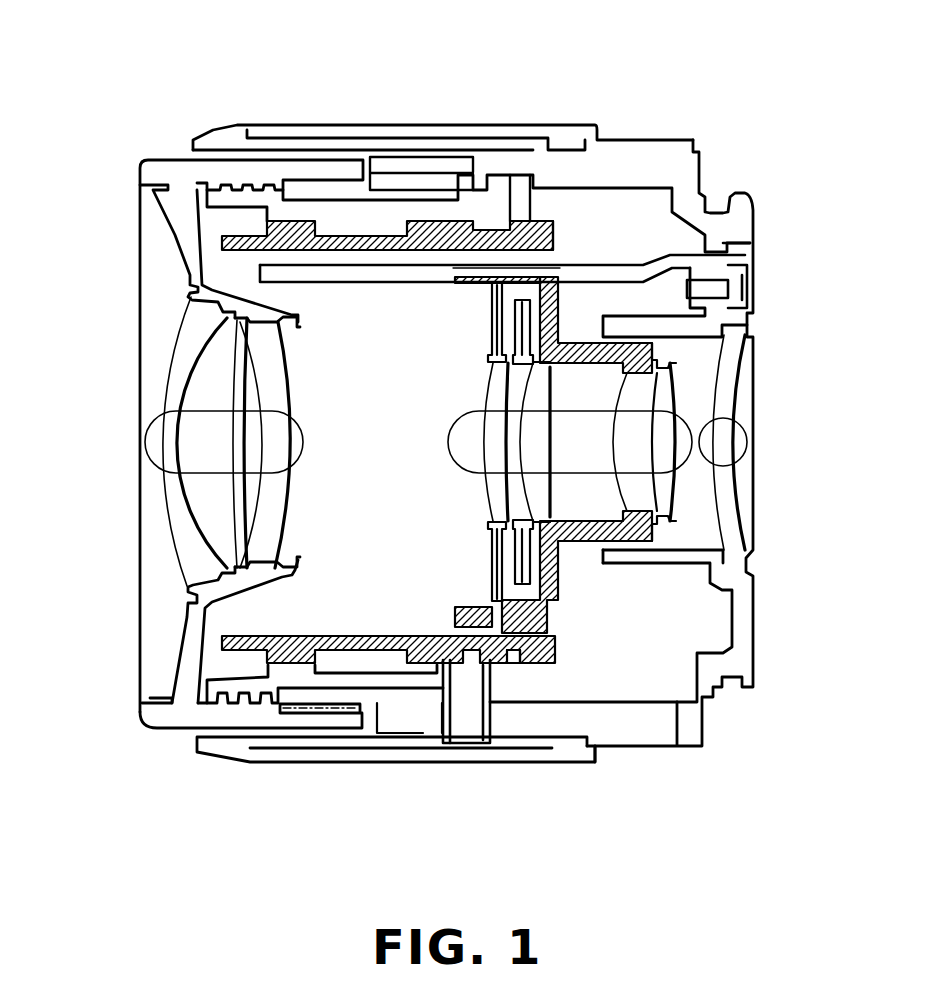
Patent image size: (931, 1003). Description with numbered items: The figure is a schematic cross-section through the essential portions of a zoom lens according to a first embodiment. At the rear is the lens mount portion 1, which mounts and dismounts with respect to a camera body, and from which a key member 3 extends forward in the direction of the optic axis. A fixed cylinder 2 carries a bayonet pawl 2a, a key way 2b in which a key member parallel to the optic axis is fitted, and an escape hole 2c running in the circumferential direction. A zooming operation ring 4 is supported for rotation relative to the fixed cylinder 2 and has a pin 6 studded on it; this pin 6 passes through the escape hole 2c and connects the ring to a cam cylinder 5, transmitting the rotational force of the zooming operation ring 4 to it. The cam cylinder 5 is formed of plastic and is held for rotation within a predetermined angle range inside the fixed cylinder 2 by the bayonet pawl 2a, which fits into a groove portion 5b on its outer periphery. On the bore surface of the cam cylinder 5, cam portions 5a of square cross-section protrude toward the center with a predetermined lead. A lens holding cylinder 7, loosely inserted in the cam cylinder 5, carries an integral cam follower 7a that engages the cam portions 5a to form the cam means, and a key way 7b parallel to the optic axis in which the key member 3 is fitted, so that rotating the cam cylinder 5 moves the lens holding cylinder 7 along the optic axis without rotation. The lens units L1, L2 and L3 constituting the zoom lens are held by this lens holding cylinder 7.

The lens mount portion 1 is at (703, 208).
The fixed cylinder 2 is at (607, 160).
The bayonet pawl 2a is at (513, 218).
The key way 2b is at (399, 173).
The escape hole 2c is at (505, 733).
The key member 3 is at (557, 247).
The zooming operation ring 4 is at (573, 748).
The cam cylinder 5 is at (385, 657).
The cam portions 5a is at (523, 657).
The groove portion 5b is at (612, 275).
The pin 6 is at (467, 728).
The lens holding cylinder 7 is at (550, 607).
The cam follower 7a is at (550, 633).
The key way 7b is at (458, 258).
The lens unit L1 is at (157, 468).
The lens unit L2 is at (680, 427).
The lens unit L3 is at (747, 452).